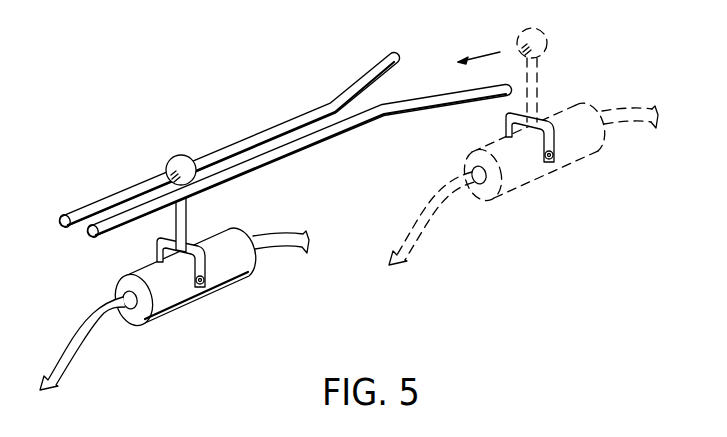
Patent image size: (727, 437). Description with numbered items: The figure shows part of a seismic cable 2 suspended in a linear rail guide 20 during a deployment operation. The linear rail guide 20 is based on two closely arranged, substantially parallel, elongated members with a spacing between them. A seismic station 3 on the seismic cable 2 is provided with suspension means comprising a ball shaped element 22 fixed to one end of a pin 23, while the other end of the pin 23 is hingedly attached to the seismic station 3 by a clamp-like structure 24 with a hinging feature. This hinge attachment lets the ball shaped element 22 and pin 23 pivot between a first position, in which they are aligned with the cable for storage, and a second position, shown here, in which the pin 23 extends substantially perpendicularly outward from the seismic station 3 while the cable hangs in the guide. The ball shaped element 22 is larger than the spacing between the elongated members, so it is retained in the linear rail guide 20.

The seismic cable 2 is at (78, 358).
The seismic station 3 is at (162, 314).
The linear rail guide 20 is at (372, 66).
The ball shaped element 22 is at (184, 153).
The pin 23 is at (188, 206).
The clamp-like structure 24 is at (233, 275).